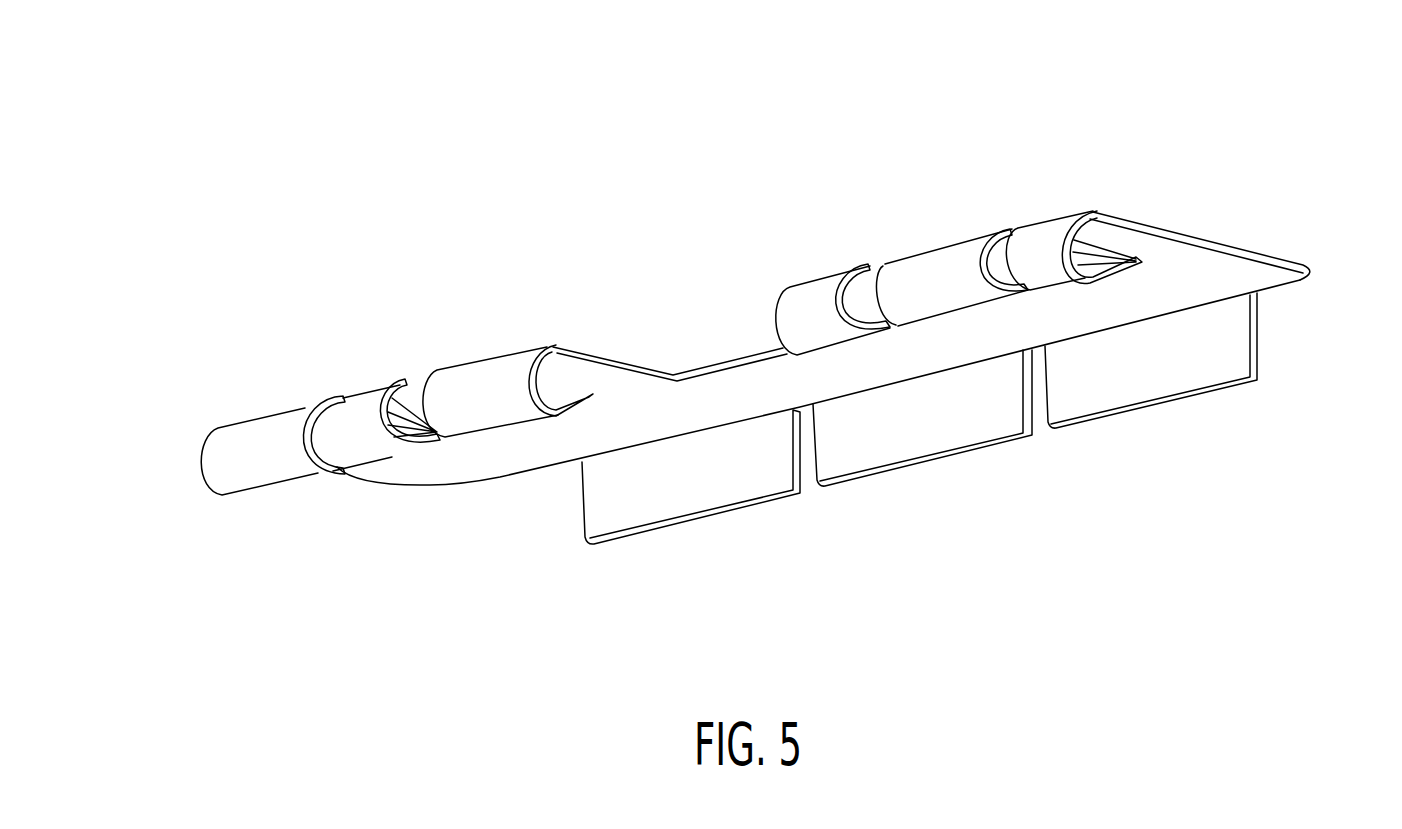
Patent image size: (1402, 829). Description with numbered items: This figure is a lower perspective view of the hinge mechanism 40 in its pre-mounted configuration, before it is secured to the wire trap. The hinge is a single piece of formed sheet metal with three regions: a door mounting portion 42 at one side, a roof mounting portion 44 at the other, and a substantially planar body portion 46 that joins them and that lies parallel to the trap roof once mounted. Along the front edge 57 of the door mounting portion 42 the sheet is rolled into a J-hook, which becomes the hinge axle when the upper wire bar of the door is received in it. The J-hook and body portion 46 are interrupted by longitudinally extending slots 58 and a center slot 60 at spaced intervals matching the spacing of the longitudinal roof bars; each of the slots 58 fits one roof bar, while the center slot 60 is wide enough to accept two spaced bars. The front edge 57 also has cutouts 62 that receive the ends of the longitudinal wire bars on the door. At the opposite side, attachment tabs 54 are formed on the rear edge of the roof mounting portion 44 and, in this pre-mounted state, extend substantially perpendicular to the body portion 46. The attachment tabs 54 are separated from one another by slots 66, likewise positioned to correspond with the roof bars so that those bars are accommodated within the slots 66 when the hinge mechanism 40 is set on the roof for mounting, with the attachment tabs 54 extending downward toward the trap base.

The hinge mechanism 40 is at (1303, 147).
The door mounting portion 42 is at (178, 459).
The roof mounting portion 44 is at (574, 502).
The body portion 46 is at (1167, 222).
The attachment tabs 54 is at (1205, 365).
The front edge 57 is at (782, 297).
The slots 58 is at (324, 398).
The center slot 60 is at (620, 360).
The cutouts 62 is at (424, 380).
The slots 66 is at (1032, 412).